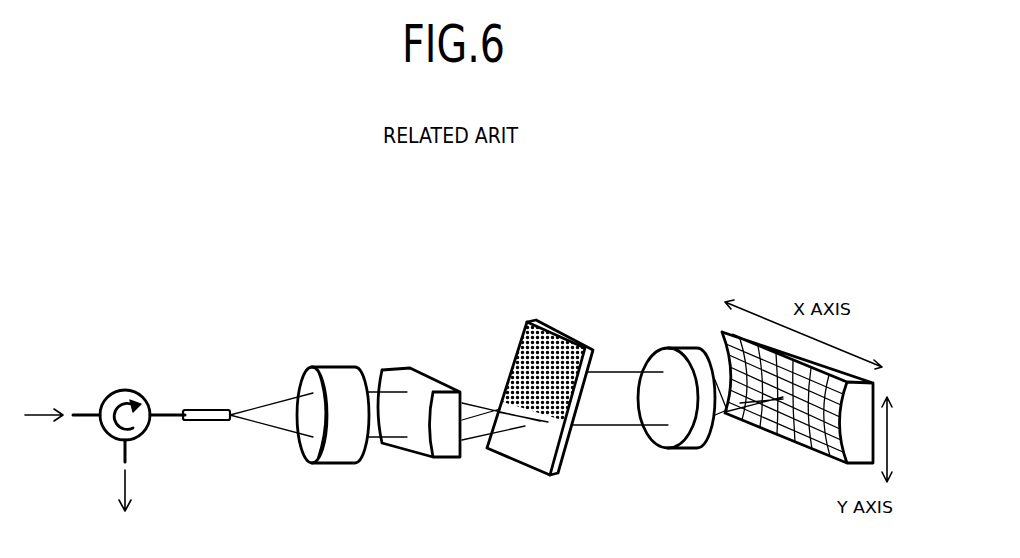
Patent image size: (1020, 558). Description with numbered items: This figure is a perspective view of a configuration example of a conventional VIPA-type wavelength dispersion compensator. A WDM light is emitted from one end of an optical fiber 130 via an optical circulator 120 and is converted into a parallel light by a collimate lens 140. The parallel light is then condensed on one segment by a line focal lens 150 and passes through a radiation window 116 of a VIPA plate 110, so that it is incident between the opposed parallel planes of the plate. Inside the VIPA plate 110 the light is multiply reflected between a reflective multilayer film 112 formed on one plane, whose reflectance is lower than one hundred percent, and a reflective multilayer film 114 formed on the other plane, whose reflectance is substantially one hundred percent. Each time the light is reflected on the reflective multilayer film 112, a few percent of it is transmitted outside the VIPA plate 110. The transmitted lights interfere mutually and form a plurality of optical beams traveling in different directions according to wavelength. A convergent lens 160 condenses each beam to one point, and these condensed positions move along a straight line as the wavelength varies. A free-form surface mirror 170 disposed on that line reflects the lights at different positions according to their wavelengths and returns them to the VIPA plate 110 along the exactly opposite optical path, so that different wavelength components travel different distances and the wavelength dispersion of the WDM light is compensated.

The VIPA plate 110 is at (547, 384).
The reflective multilayer film 112 is at (575, 452).
The reflective multilayer film 114 is at (525, 355).
The radiation window 116 is at (522, 437).
The optical circulator 120 is at (125, 390).
The optical fiber 130 is at (200, 409).
The collimate lens 140 is at (314, 365).
The line focal lens 150 is at (393, 370).
The convergent lens 160 is at (673, 348).
The free-form surface mirror 170 is at (785, 437).